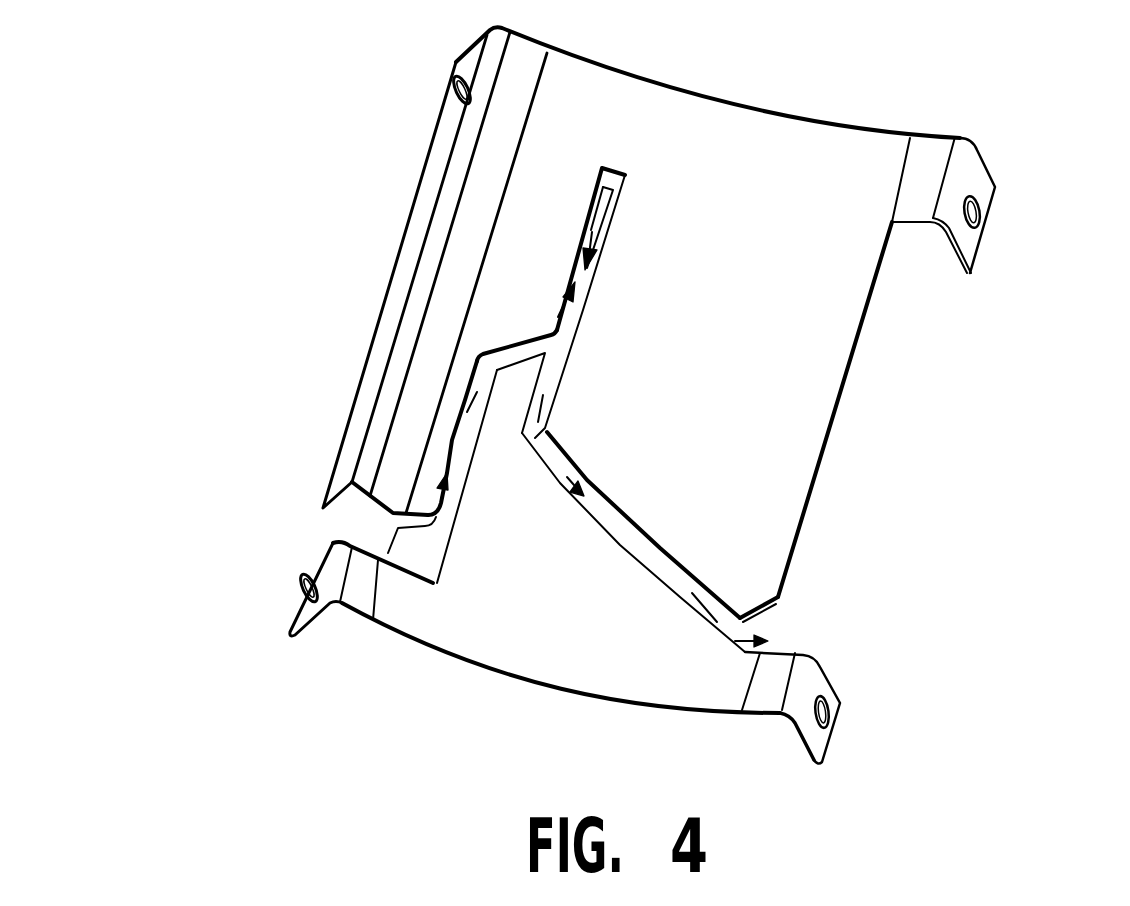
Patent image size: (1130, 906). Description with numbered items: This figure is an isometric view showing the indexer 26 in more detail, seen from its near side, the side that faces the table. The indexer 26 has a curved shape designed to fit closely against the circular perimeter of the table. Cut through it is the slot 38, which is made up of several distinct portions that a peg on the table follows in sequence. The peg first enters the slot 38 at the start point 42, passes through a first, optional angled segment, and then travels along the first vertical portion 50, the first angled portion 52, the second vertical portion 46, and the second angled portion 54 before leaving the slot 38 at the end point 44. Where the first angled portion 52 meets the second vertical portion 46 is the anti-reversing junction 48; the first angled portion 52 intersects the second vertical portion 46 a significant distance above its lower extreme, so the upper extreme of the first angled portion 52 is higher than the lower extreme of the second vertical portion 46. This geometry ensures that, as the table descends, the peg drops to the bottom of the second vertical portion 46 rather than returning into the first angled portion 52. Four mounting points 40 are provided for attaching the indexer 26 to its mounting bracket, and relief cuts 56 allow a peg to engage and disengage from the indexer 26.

The indexer 26 is at (438, 717).
The slot 38 is at (478, 455).
The mounting points 40 is at (453, 83).
The start point 42 is at (392, 514).
The end point 44 is at (742, 619).
The second vertical portion 46 is at (610, 227).
The anti-reversing junction 48 is at (550, 330).
The first vertical portion 50 is at (453, 428).
The first angled portion 52 is at (497, 349).
The second angled portion 54 is at (653, 539).
The relief cuts 56 is at (347, 490).